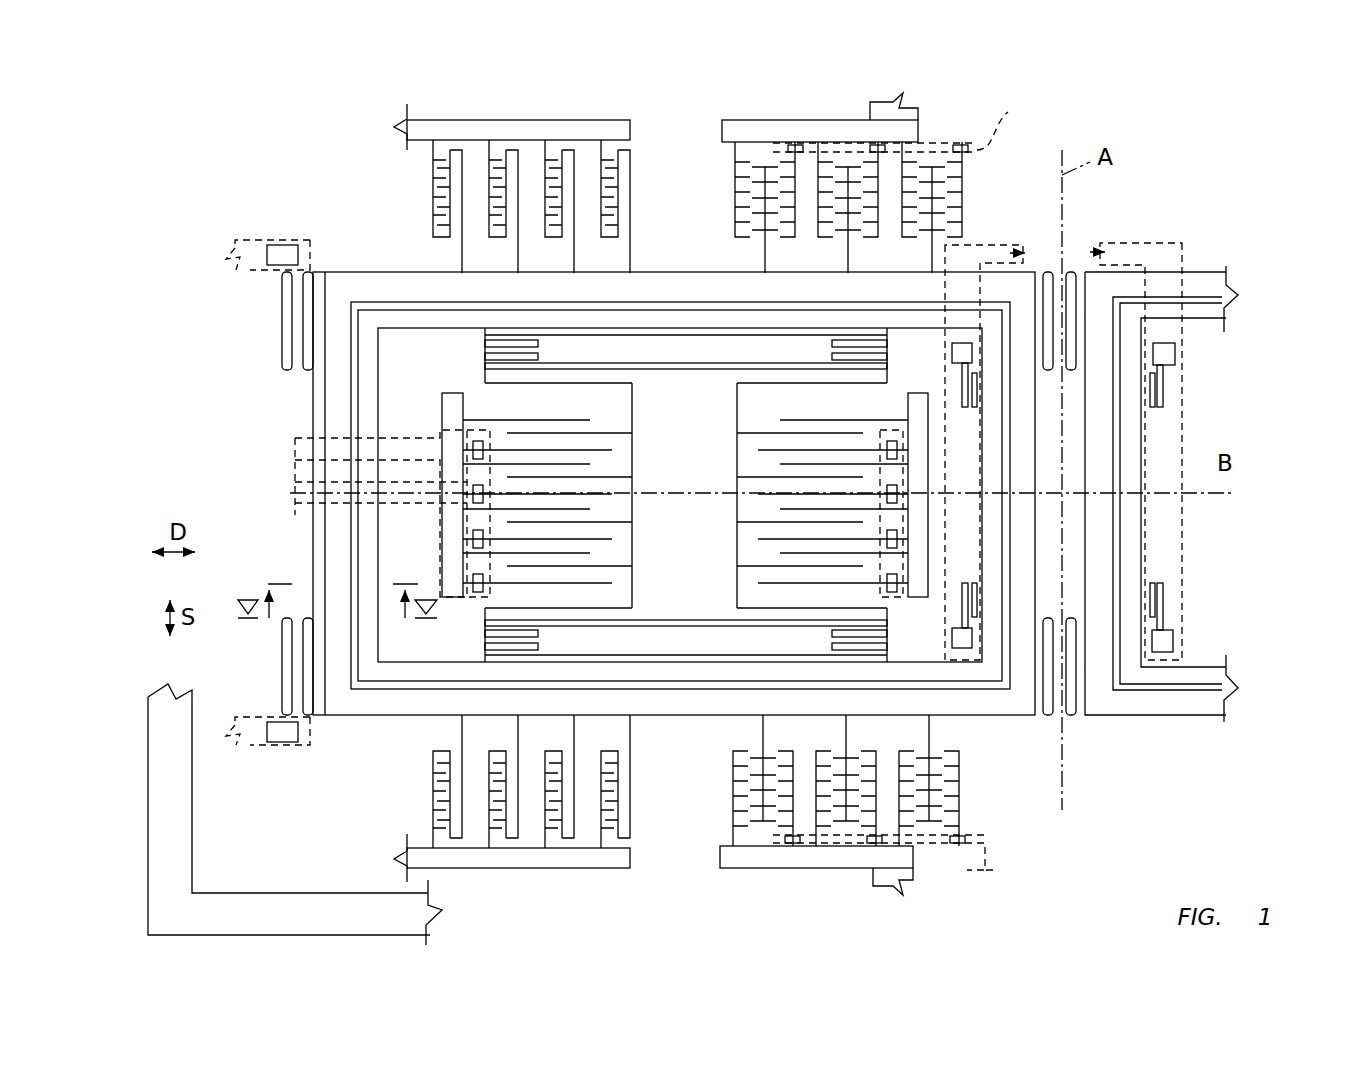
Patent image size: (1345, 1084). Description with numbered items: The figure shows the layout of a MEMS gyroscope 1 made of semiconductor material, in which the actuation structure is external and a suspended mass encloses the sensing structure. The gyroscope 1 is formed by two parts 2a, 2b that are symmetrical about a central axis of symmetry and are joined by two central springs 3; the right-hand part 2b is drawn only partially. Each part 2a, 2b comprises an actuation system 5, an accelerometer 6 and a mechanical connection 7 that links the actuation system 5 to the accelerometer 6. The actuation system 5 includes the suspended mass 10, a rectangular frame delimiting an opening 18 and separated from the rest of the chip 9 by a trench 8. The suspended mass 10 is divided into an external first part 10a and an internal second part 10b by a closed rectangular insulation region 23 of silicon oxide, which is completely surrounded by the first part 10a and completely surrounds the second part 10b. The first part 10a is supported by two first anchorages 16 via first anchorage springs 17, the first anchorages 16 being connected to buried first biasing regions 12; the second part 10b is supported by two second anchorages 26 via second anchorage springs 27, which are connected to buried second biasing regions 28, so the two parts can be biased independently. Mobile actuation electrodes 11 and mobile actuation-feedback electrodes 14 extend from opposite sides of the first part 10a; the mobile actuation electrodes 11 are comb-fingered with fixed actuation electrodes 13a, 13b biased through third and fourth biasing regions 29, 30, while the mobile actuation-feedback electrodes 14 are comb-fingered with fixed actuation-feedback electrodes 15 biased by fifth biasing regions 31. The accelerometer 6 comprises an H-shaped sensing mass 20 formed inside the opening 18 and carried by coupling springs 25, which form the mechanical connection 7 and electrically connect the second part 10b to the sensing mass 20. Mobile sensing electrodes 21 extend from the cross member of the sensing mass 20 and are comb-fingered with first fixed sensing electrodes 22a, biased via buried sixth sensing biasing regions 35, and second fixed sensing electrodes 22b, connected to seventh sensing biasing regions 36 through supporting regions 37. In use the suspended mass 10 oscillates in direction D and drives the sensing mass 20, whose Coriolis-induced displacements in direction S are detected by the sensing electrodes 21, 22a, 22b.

The gyroscope 1 is at (1195, 160).
The left-hand part 2a is at (317, 178).
The right-hand part 2b is at (1270, 345).
The central springs 3 is at (1070, 270).
The actuation system 5 is at (392, 180).
The accelerometer 6 is at (455, 633).
The mechanical connection 7 is at (448, 345).
The trench 8 is at (295, 814).
The chip 9 is at (330, 915).
The suspended mass 10 is at (1146, 543).
The first part 10a is at (318, 405).
The second part 10b is at (360, 543).
The mobile actuation electrodes 11 is at (937, 165).
The first biasing regions 12 is at (262, 245).
The fixed actuation electrodes 13a is at (736, 166).
The fixed actuation electrodes 13b is at (801, 167).
The mobile actuation-feedback electrodes 14 is at (638, 195).
The fixed actuation-feedback electrodes 15 is at (487, 200).
The first anchorages 16 is at (283, 245).
The first anchorage springs 17 is at (285, 332).
The opening 18 is at (1270, 436).
The sensing mass 20 is at (686, 495).
The mobile sensing electrodes 21 is at (617, 477).
The first fixed sensing electrodes 22a is at (600, 539).
The second fixed sensing electrodes 22b is at (572, 553).
The insulation region 23 is at (683, 302).
The coupling springs 25 is at (538, 356).
The second anchorages 26 is at (952, 353).
The second anchorage springs 27 is at (965, 408).
The second biasing regions 28 is at (988, 243).
The third biasing regions 29 is at (762, 132).
The fourth biasing regions 30 is at (906, 481).
The fifth biasing regions 31 is at (628, 128).
The sixth sensing biasing regions 35 is at (295, 446).
The seventh sensing biasing regions 36 is at (295, 494).
The supporting regions 37 is at (442, 543).